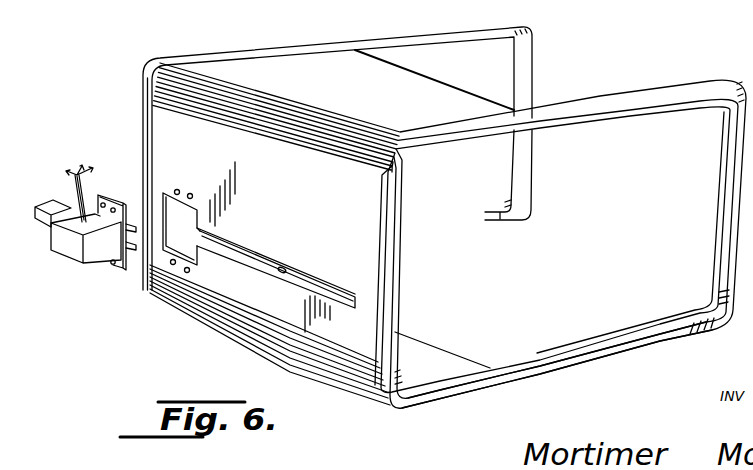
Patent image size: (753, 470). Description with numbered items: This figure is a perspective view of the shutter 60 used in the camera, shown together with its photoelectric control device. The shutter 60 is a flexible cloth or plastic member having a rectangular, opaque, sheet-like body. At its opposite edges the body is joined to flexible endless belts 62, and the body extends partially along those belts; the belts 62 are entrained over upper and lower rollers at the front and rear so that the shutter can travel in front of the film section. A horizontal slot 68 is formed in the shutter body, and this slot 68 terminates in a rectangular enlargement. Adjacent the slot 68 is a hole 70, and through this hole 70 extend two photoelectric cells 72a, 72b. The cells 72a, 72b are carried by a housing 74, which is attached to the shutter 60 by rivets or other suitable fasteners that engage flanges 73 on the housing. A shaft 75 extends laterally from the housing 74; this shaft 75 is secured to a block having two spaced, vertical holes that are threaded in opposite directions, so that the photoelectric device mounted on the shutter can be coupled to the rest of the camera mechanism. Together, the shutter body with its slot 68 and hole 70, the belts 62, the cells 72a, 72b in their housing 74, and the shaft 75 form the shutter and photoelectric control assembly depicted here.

The shutter 60 is at (444, 247).
The endless belts 62 is at (540, 362).
The horizontal slot 68 is at (280, 272).
The hole 70 is at (91, 236).
The photoelectric cell 72a is at (136, 248).
The photoelectric cell 72b is at (135, 215).
The flanges 73 is at (108, 198).
The housing 74 is at (86, 238).
The shaft 75 is at (61, 205).